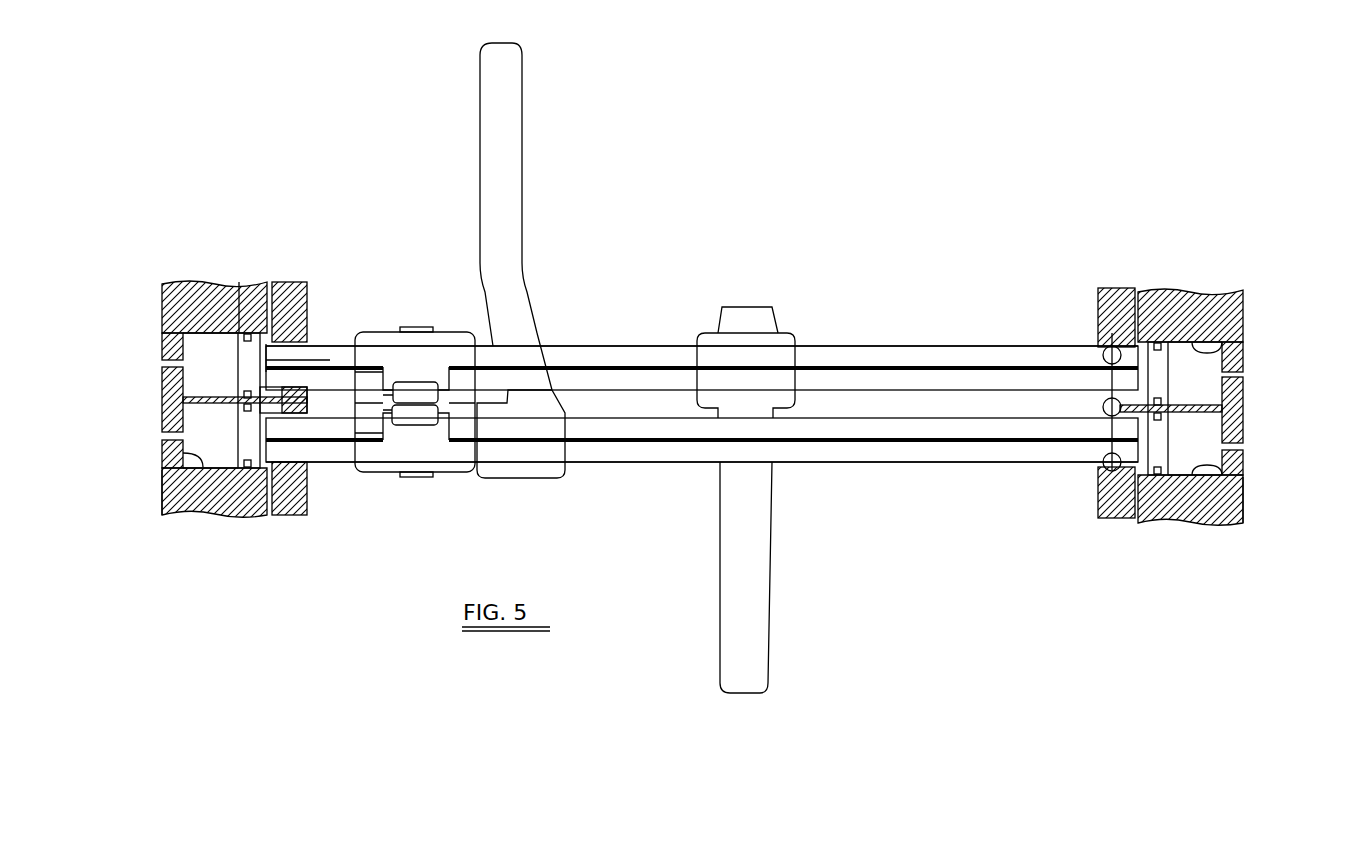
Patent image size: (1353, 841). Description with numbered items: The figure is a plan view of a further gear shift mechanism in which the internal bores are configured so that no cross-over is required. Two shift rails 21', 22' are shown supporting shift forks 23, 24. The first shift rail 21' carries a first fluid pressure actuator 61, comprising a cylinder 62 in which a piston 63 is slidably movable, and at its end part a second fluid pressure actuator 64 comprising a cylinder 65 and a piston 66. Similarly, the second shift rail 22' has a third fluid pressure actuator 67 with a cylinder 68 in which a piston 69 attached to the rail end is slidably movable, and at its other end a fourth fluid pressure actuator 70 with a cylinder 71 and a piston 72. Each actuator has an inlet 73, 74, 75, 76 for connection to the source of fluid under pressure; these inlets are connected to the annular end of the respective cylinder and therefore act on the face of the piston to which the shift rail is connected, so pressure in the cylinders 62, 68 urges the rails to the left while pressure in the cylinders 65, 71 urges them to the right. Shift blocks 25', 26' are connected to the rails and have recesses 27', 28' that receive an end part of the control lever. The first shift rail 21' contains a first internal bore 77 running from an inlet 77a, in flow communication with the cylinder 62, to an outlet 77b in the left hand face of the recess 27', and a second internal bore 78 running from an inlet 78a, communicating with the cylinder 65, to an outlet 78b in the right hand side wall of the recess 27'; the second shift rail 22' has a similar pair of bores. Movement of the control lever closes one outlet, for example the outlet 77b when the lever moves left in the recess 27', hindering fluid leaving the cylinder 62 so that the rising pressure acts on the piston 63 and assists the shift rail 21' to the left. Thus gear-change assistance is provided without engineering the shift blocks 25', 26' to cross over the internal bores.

The first shift rail 21' is at (702, 318).
The second shift rail 22' is at (702, 496).
The shift fork 23 is at (515, 131).
The shift fork 24 is at (762, 648).
The shift block 25' is at (416, 369).
The shift block 26' is at (434, 454).
The recess 27' is at (410, 319).
The recess 28' is at (421, 477).
The first fluid pressure actuator 61 is at (297, 268).
The cylinder 62 is at (180, 340).
The piston 63 is at (247, 293).
The second fluid pressure actuator 64 is at (1250, 290).
The cylinder 65 is at (1247, 340).
The piston 66 is at (1163, 357).
The third fluid pressure actuator 67 is at (157, 522).
The cylinder 68 is at (188, 452).
The piston 69 is at (253, 456).
The fourth fluid pressure actuator 70 is at (1247, 527).
The cylinder 71 is at (1163, 453).
The piston 72 is at (1183, 524).
The inlet 73 is at (243, 347).
The inlet 74 is at (270, 493).
The inlet 75 is at (1135, 287).
The inlet 76 is at (1135, 524).
The first internal bore 77 is at (321, 347).
The inlet 77a is at (267, 355).
The outlet 77b is at (390, 375).
The second internal bore 78 is at (680, 368).
The inlet 78a is at (1120, 287).
The outlet 78b is at (442, 372).